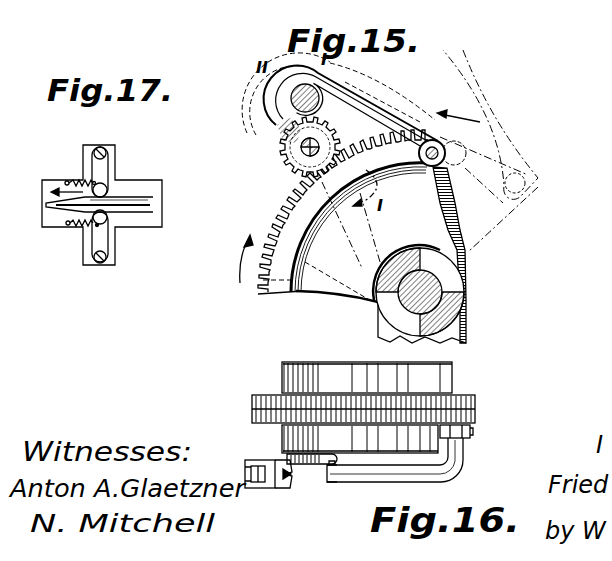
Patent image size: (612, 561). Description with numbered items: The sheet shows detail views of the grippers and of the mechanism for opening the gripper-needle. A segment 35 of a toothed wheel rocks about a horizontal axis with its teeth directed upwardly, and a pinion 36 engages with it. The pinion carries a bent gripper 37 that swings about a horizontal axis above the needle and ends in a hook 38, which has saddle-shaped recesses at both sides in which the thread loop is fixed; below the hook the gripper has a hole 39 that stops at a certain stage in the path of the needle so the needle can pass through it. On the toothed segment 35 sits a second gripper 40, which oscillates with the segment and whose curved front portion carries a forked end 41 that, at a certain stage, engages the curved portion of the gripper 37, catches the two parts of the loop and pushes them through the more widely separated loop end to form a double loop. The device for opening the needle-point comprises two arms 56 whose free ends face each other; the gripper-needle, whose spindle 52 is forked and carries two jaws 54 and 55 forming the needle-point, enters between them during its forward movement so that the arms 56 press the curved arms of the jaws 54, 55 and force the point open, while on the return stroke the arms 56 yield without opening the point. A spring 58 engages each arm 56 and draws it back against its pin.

In FIG. 15, the segment of a toothed wheel 35 is at (270, 227).
In FIG. 16, the segment of a toothed wheel 35 is at (473, 407).
In FIG. 15, the pinion 36 is at (282, 163).
In FIG. 16, the pinion 36 is at (282, 397).
In FIG. 15, the bent gripper 37 is at (272, 106).
In FIG. 16, the bent gripper 37 is at (272, 460).
In FIG. 15, the hook 38 is at (334, 110).
In FIG. 16, the hook 38 is at (290, 476).
In FIG. 16, the hole 39 is at (262, 489).
In FIG. 15, the second gripper 40 is at (370, 110).
In FIG. 16, the second gripper 40 is at (413, 464).
In FIG. 16, the forked end 41 is at (328, 483).
In FIG. 15, the spindle 52 is at (341, 4).
In FIG. 17, the jaw 54 is at (47, 205).
In FIG. 17, the jaw 55 is at (46, 211).
In FIG. 17, the arms 56 is at (98, 167).
In FIG. 17, the spring 58 is at (67, 181).